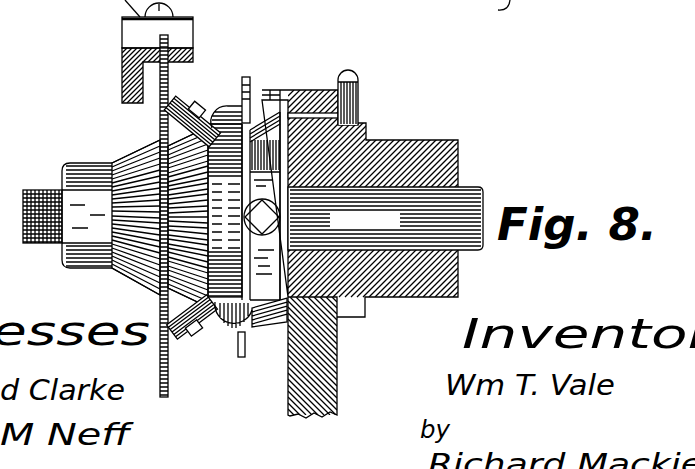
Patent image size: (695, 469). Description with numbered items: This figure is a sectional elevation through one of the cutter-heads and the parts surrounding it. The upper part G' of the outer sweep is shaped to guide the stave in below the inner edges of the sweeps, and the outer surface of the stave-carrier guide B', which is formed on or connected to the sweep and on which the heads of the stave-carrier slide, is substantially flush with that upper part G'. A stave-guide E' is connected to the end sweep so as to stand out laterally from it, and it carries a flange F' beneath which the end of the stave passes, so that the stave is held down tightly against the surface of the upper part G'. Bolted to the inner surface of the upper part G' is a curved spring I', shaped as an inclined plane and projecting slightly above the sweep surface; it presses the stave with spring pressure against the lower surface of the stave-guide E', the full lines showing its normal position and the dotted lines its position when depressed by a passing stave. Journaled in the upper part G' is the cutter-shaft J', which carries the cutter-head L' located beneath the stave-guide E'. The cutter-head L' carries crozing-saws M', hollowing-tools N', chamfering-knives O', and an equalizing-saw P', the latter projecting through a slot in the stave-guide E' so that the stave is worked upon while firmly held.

The stave-guide E' is at (103, 216).
The flange F' is at (198, 24).
The cutter-head L' is at (56, 203).
The equalizing-saw P' is at (157, 215).
The chamfering-knives O' is at (151, 230).
The hollowing-tools N' is at (232, 223).
The crozing-saws M' is at (324, 213).
The curved spring I' is at (385, 85).
The stave-carrier guides B' is at (360, 203).
The cutter-shaft J' is at (409, 182).
The upper part of outer sweep G' is at (344, 357).